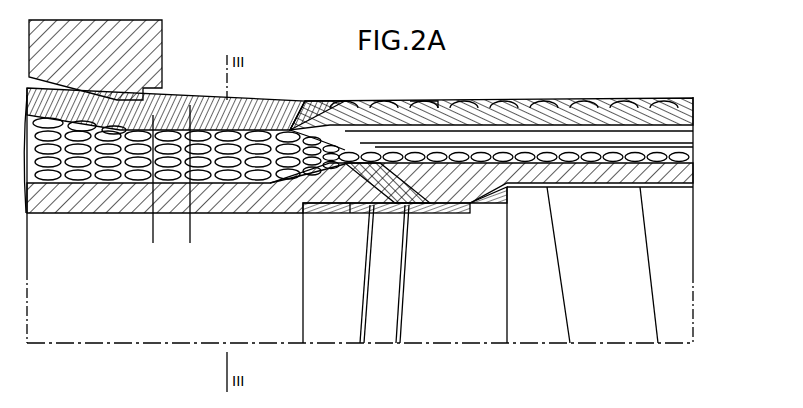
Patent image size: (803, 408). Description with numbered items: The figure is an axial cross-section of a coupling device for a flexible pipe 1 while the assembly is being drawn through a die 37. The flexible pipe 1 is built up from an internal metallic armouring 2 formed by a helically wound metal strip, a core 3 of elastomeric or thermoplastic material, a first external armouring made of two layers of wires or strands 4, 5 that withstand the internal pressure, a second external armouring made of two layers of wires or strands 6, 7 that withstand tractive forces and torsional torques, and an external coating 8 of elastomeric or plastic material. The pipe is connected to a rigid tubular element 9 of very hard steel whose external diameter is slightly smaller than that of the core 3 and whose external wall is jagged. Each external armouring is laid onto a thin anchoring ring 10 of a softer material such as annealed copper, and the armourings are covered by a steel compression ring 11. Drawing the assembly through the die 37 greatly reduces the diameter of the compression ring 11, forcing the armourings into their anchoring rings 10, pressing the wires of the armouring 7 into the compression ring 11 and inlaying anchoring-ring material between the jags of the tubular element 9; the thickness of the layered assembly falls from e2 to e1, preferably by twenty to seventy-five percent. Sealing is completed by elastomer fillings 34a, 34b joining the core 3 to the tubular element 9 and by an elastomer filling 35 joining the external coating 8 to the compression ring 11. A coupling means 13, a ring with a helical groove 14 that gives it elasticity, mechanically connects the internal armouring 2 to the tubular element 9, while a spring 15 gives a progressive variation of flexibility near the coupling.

The flexible pipe 1 is at (689, 343).
The internal metallic armouring 2 is at (688, 195).
The core 3 is at (693, 170).
The layer of wires or strands 4 is at (268, 106).
The layer of wires or strands 5 is at (245, 106).
The wires or strands 6 is at (205, 125).
The wires or strands 7 is at (175, 118).
The external coating 8 is at (693, 121).
The tubular element 9 is at (32, 120).
The anchoring ring 10 is at (132, 125).
The compression ring 11 is at (28, 213).
The coupling means 13 is at (478, 213).
The helical groove 14 is at (398, 325).
The spring 15 is at (433, 101).
The filling of elastomer 34a is at (352, 213).
The filling of elastomer 34b is at (433, 213).
The filling of elastomer 35 is at (318, 103).
The die 37 is at (150, 42).
The thickness after drawing e1 is at (156, 190).
The initial thickness e2 is at (193, 185).